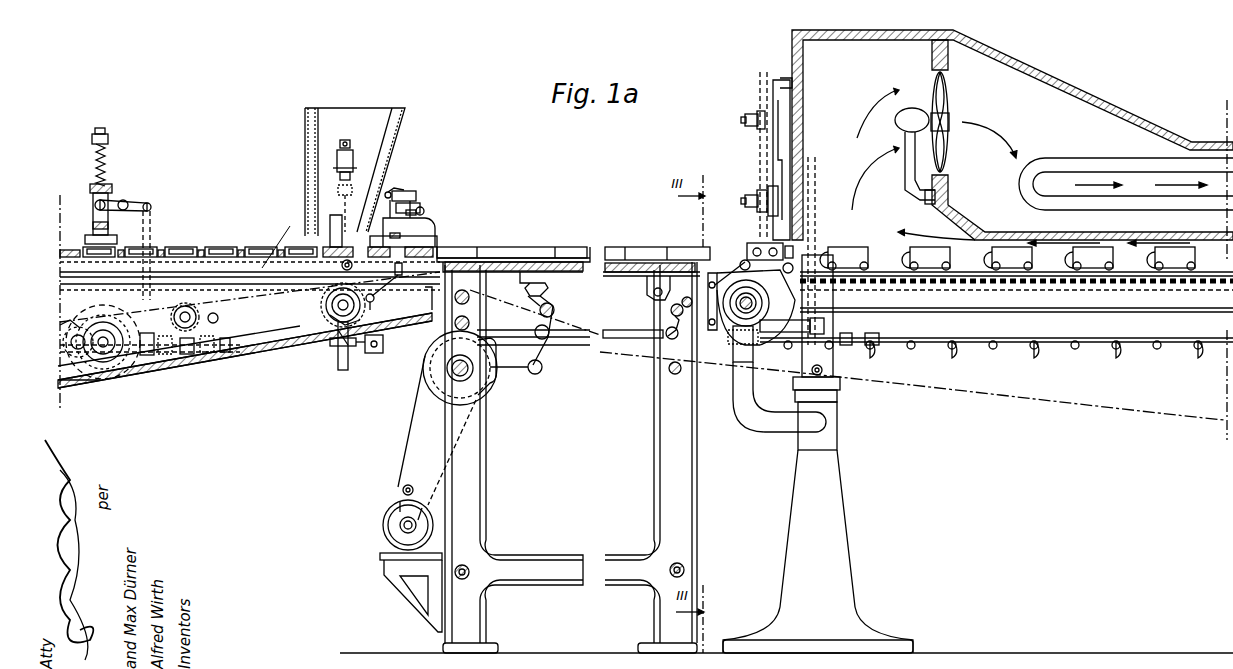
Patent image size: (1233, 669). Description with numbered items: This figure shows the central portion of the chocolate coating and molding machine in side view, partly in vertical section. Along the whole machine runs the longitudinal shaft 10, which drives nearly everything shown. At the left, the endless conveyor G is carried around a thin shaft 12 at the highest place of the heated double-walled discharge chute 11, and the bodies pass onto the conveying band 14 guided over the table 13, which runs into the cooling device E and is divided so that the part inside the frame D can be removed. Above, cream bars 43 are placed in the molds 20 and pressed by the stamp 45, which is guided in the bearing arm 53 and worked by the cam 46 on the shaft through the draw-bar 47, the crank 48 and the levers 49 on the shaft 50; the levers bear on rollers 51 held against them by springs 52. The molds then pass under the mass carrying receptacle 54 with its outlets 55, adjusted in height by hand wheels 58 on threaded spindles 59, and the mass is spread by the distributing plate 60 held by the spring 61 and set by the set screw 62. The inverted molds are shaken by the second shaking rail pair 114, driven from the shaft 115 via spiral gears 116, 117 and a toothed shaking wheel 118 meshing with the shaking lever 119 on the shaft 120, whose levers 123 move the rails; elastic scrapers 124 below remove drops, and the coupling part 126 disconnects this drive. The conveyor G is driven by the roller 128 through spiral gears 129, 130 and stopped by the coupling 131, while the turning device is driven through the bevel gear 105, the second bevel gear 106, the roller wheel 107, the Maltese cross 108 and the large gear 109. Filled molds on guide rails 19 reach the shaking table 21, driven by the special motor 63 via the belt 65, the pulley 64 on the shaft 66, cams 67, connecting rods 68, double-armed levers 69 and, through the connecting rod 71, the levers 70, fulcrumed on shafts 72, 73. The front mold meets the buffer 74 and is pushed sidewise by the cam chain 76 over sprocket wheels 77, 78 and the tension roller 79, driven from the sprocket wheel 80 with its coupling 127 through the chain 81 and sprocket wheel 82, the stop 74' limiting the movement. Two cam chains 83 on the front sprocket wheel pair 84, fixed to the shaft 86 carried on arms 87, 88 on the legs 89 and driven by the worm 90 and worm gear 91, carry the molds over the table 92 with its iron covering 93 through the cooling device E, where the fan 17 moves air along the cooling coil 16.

The longitudinal shaft 10 is at (576, 346).
The heated double-walled discharge chute 11 is at (262, 345).
The thin shaft 12 is at (418, 298).
The table 13 is at (580, 284).
The conveying band 14 is at (1136, 290).
The cooling coil 16 is at (1138, 170).
The fan 17 is at (946, 108).
The mold guide rails 19 is at (562, 258).
The molds 20 is at (505, 248).
The shaking or beating table 21 is at (532, 266).
The cream bars 43 is at (183, 249).
The stamp 45 is at (93, 224).
The disc or cam 46 is at (152, 357).
The draw-bar 47 is at (151, 224).
The crank 48 is at (150, 205).
The levers 49 is at (115, 203).
The shaft 50 is at (123, 210).
The rollers 51 is at (95, 203).
The springs 52 is at (94, 147).
The bearing arm 53 is at (108, 190).
The mass carrying receptacle 54 is at (354, 112).
The outlets 55 is at (338, 222).
The hand wheels 58 is at (354, 166).
The threaded spindles 59 is at (349, 143).
The distributing plate 60 is at (409, 223).
The spring 61 is at (402, 191).
The set screw 62 is at (424, 212).
The special motor 63 is at (385, 518).
The pulley 64 is at (490, 383).
The belt 65 is at (414, 420).
The shaft 66 is at (452, 368).
The cams 67 is at (423, 368).
The connecting rods 68 is at (524, 369).
The double-armed levers 69 is at (542, 366).
The levers 70 is at (666, 325).
The connecting rod 71 is at (608, 332).
The shaft 72 is at (554, 311).
The shaft 73 is at (670, 309).
The elastic stop or buffer 74 is at (770, 240).
The elastic stop 74' is at (762, 246).
The cam chain 76 is at (772, 158).
The sprocket wheel 77 is at (750, 196).
The sprocket wheel 78 is at (756, 197).
The tension roller 79 is at (755, 112).
The sprocket wheel 80 is at (820, 338).
The chain 81 is at (816, 240).
The sprocket wheel 82 is at (810, 205).
The cam chains 83 is at (985, 348).
The front sprocket wheel pair 84 is at (720, 340).
The shaft 86 is at (756, 303).
The arm 87 is at (762, 365).
The arm 88 is at (740, 404).
The legs 89 is at (843, 518).
The worm 90 is at (742, 352).
The worm gear 91 is at (740, 262).
The table 92 is at (946, 272).
The sheet or flat iron covering 93 is at (984, 276).
The bevel gear 105 is at (112, 330).
The second bevel gear 106 is at (112, 350).
The roller wheel 107 is at (105, 355).
The four-part Maltese cross 108 is at (78, 381).
The large gear 109 is at (70, 325).
The second shaking rail pair 114 is at (262, 268).
The shaft 115 is at (326, 308).
The spiral gear 116 is at (362, 318).
The spiral gear 117 is at (342, 370).
The toothed shaking wheel 118 is at (330, 298).
The shaking lever 119 is at (342, 266).
The shaft 120 is at (395, 255).
The levers 123 is at (375, 299).
The elastic scrapers 124 is at (447, 260).
The coupling part 126 is at (372, 354).
The coupling 127 is at (858, 336).
The roller 128 is at (182, 303).
The spiral gear 129 is at (200, 312).
The spiral gear 130 is at (186, 356).
The coupling 131 is at (208, 354).
The frame D is at (481, 476).
The cooling device E is at (1100, 105).
The endless conveyor G is at (233, 308).